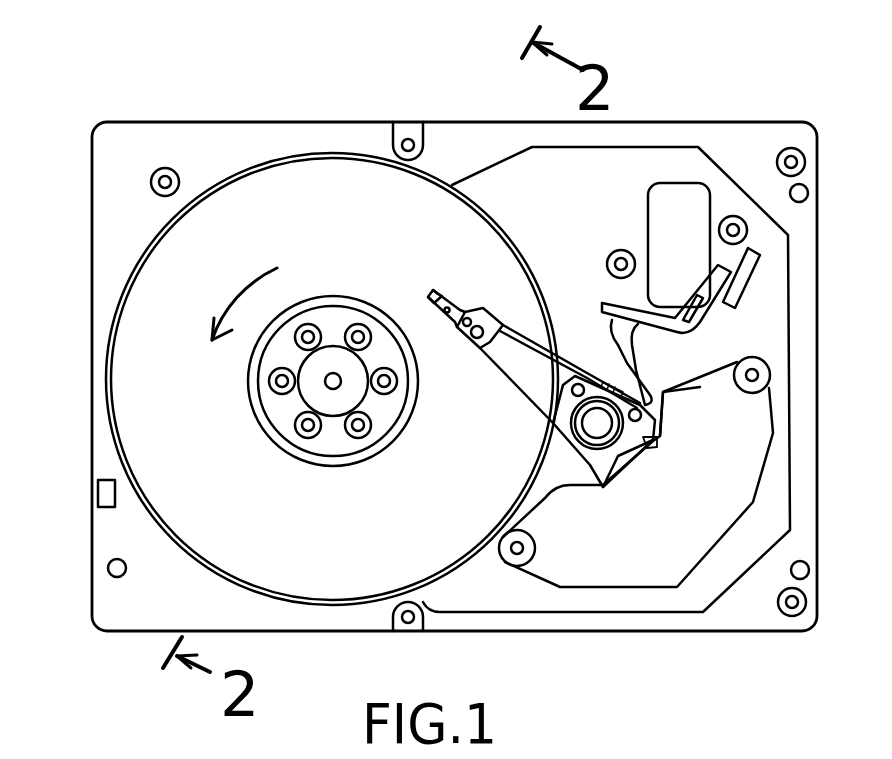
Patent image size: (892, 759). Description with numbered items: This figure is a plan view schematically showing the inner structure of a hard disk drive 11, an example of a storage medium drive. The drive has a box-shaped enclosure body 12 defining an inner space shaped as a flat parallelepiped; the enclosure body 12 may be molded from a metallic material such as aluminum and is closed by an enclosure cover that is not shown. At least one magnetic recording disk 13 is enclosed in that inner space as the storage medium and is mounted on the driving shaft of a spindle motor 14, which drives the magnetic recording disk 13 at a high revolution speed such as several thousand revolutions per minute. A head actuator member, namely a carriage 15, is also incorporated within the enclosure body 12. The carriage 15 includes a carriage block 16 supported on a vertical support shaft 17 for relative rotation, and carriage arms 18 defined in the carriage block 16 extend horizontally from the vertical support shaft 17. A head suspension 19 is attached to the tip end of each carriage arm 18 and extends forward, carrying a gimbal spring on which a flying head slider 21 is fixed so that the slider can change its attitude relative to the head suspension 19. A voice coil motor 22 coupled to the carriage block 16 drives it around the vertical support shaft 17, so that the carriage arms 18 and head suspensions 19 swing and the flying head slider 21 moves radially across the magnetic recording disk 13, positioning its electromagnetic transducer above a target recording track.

The hard disk drive 11 is at (96, 74).
The enclosure body 12 is at (92, 258).
The magnetic recording disk 13 is at (107, 373).
The spindle motor 14 is at (302, 402).
The carriage 15 is at (534, 432).
The carriage block 16 is at (618, 457).
The vertical support shaft 17 is at (601, 400).
The carriage arm 18 is at (505, 377).
The head suspension 19 is at (450, 303).
The flying head slider 21 is at (437, 280).
The voice coil motor 22 is at (610, 602).